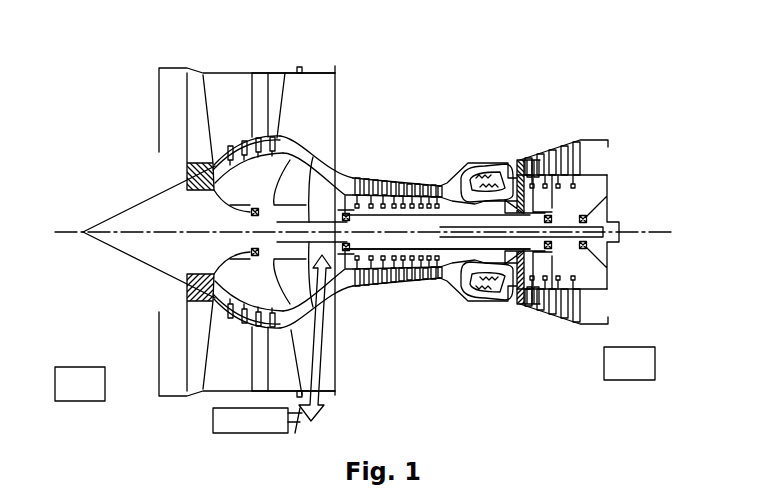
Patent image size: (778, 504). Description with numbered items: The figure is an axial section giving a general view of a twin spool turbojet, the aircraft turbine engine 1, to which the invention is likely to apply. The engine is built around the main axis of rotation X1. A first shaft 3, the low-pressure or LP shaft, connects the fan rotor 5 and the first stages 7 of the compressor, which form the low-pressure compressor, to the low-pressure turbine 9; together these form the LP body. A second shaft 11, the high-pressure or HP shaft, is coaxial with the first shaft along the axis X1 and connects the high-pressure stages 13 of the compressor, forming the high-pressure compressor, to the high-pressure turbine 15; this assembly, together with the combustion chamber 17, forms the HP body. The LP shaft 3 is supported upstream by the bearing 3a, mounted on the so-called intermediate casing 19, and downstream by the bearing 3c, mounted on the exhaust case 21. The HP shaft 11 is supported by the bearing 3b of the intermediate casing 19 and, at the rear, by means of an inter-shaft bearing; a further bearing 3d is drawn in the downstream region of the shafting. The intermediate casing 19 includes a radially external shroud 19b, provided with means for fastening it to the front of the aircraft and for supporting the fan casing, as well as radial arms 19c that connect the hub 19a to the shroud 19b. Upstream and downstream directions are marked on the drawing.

The aircraft turbine engine 1 is at (410, 78).
The main axis of rotation X1 is at (72, 232).
The first shaft 3 is at (310, 221).
The bearing 3a is at (248, 213).
The bearing 3b is at (347, 250).
The bearing 3c is at (590, 217).
The bearing 3d is at (549, 252).
The fan rotor 5 is at (195, 118).
The first stages of the compressor 7 is at (286, 162).
The low-pressure turbine 9 is at (554, 140).
The second shaft 11 is at (457, 183).
The high-pressure stages of the compressor 13 is at (404, 250).
The high-pressure turbine 15 is at (512, 165).
The combustion chamber 17 is at (486, 163).
The intermediate casing 19 is at (346, 88).
The hub 19a is at (313, 157).
The shroud 19b is at (319, 72).
The radial arms 19c is at (308, 135).
The exhaust case 21 is at (612, 289).